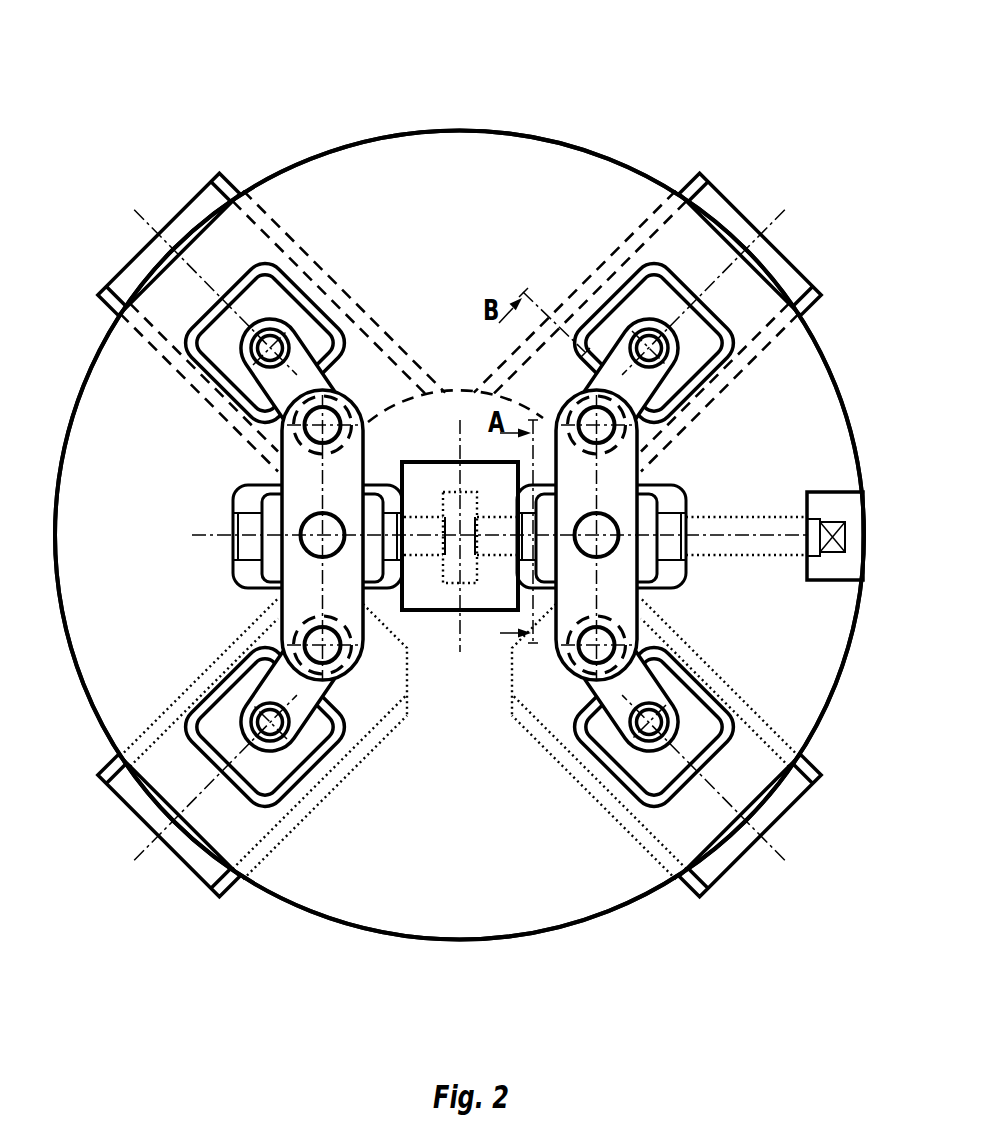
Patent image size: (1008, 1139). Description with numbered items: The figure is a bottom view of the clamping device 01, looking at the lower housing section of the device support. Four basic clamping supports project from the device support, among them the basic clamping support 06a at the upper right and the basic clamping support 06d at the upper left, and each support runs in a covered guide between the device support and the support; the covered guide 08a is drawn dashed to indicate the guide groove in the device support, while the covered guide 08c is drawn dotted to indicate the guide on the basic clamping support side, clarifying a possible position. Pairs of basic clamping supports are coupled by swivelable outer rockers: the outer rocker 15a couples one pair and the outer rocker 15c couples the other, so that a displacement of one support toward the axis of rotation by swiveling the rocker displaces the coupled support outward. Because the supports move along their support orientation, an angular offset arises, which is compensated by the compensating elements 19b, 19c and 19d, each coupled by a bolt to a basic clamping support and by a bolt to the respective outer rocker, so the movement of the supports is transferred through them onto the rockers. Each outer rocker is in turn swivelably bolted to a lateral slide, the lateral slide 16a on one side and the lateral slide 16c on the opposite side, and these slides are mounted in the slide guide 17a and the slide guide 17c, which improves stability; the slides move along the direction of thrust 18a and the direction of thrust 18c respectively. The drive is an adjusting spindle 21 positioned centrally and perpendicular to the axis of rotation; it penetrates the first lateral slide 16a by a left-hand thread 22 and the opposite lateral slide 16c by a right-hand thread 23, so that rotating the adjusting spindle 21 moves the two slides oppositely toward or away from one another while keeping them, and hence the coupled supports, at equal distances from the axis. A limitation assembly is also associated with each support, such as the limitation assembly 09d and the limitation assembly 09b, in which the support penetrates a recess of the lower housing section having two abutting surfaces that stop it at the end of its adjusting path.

The clamping device 01 is at (129, 51).
The basic clamping support 06a is at (735, 222).
The basic clamping support 06d is at (208, 207).
The covered guide 08a is at (604, 263).
The covered guide 08c is at (288, 823).
The limitation assembly 09b is at (643, 805).
The limitation assembly 09d is at (322, 303).
The outer rocker 15a is at (622, 483).
The outer rocker 15c is at (300, 473).
The lateral slide 16a is at (655, 565).
The lateral slide 16c is at (272, 507).
The slide guide 17a is at (654, 596).
The slide guide 17c is at (265, 596).
The direction of thrust 18a is at (700, 537).
The direction of thrust 18c is at (199, 535).
The compensating element 19b is at (580, 695).
The compensating element 19c is at (308, 692).
The compensating element 19d is at (302, 380).
The adjusting spindle 21 is at (740, 517).
The left-hand thread 22 is at (527, 605).
The right-hand thread 23 is at (240, 567).